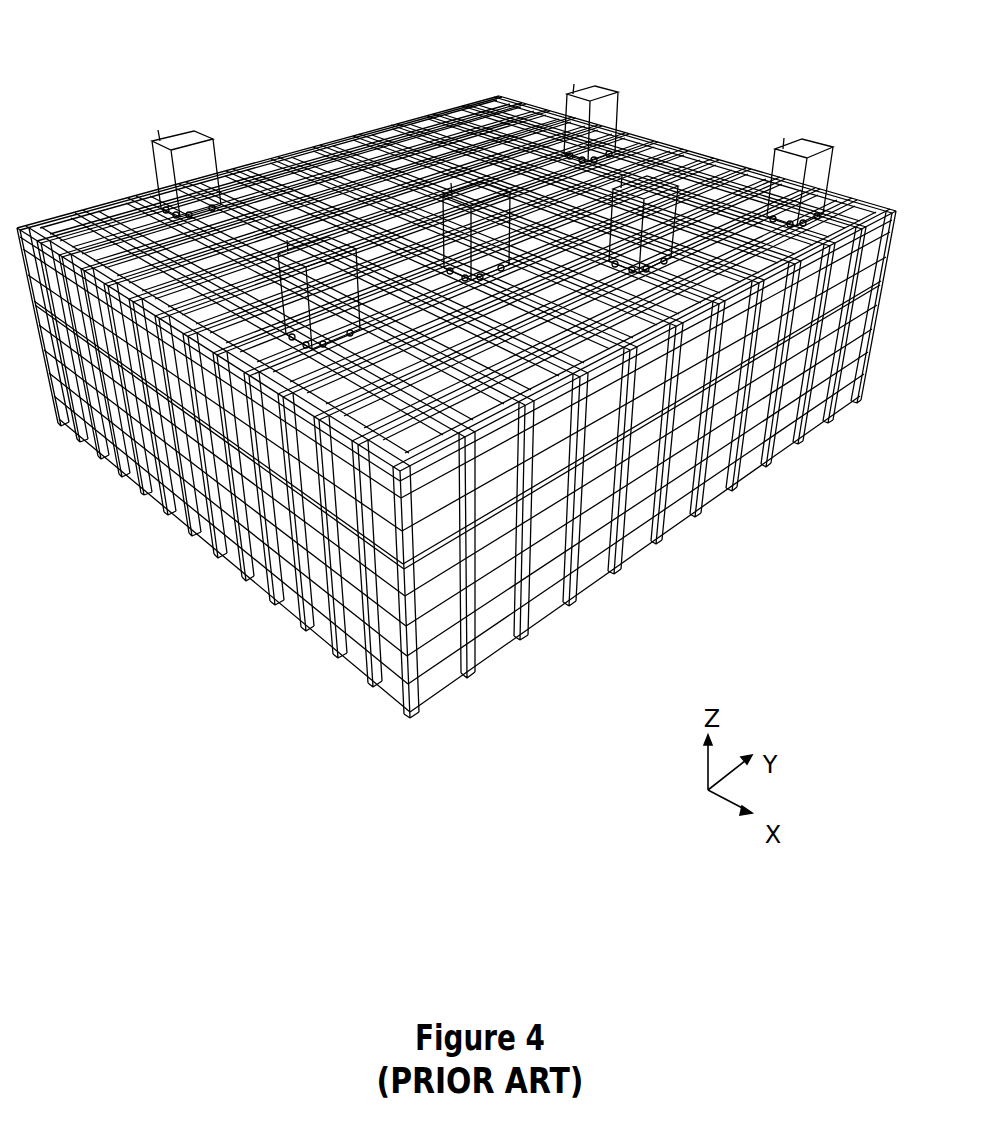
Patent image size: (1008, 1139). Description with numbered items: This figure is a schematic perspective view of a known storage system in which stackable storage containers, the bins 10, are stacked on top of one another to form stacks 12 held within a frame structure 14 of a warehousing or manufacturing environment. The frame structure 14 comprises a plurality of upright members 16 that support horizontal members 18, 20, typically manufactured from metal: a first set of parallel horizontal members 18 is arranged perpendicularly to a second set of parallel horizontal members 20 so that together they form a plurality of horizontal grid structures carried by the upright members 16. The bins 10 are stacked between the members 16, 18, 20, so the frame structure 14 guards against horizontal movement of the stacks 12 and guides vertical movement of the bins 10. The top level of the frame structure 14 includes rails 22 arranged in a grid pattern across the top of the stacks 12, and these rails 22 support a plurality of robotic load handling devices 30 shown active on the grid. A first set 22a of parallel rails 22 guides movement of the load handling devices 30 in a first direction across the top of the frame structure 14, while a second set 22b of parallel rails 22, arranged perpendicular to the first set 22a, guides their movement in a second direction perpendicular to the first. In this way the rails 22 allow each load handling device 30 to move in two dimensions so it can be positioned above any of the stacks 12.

The bin 10 is at (462, 403).
The stack 12 is at (743, 463).
The frame structure 14 is at (860, 210).
The upright member 16 is at (328, 598).
The first set of parallel horizontal members 18 is at (550, 510).
The second set of parallel horizontal members 20 is at (247, 480).
The rails 22 is at (462, 258).
The first set of parallel rails 22a is at (247, 338).
The second set of parallel rails 22b is at (322, 210).
The robotic load handling device 30 is at (612, 122).